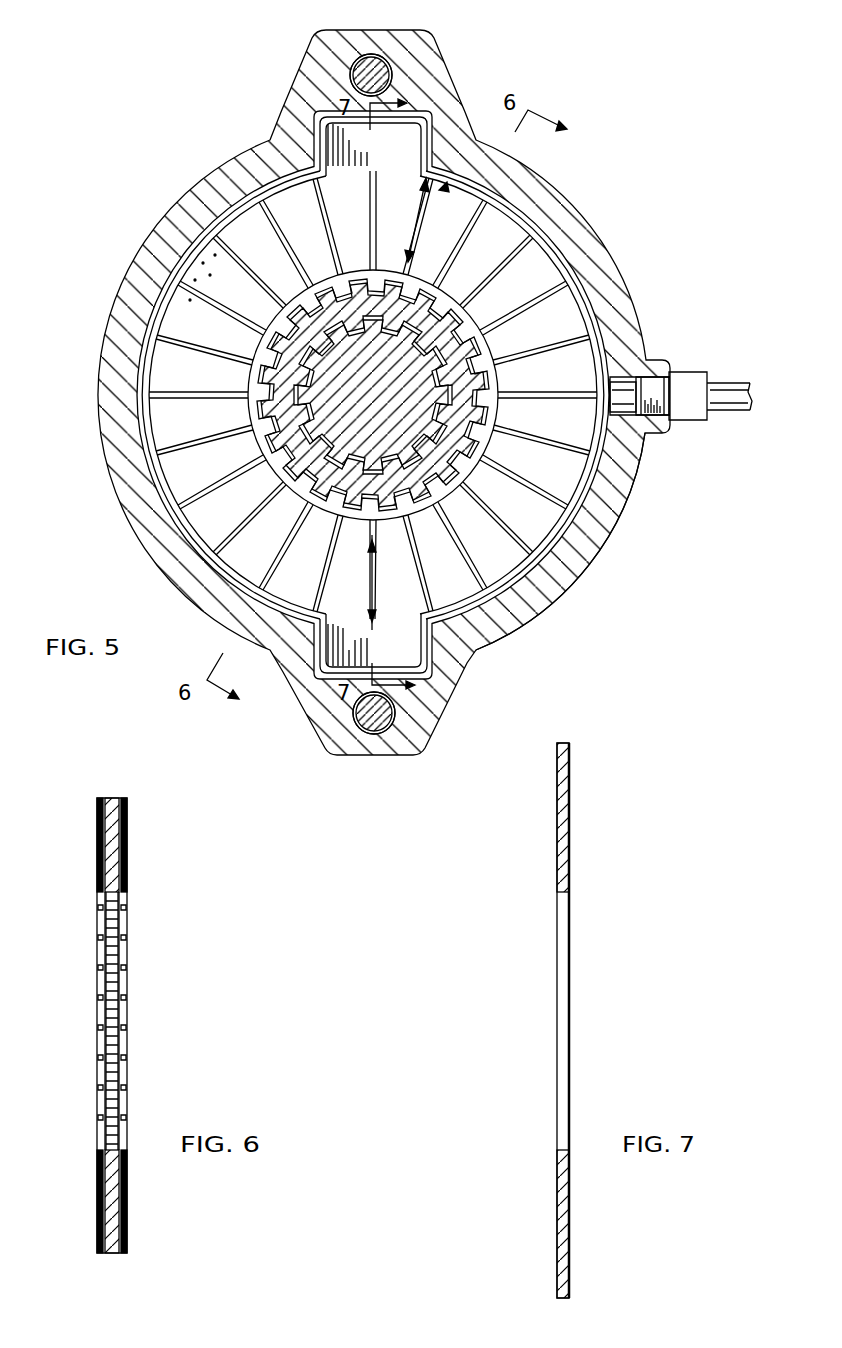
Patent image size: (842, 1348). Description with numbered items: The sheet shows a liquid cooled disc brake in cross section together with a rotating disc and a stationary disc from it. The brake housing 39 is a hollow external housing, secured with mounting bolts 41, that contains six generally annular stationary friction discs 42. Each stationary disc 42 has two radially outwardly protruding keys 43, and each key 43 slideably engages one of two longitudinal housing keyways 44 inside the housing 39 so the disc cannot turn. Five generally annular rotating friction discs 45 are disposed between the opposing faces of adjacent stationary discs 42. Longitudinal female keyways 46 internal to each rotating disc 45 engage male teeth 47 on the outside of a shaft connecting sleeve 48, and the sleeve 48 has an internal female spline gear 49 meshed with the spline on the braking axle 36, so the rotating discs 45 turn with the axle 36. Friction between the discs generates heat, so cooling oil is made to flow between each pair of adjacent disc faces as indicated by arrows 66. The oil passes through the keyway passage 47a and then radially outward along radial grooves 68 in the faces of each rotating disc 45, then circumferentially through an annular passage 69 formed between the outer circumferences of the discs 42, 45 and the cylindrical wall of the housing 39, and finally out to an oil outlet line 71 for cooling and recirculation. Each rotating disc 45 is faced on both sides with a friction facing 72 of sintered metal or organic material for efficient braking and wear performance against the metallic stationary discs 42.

In FIG. 5, the braking axle 36 is at (376, 395).
In FIG. 5, the brake housing 39 is at (590, 243).
In FIG. 5, the mounting bolt 41 is at (373, 63).
In FIG. 5, the stationary friction disc 42 is at (228, 217).
In FIG. 7, the stationary friction disc 42 is at (563, 947).
In FIG. 5, the key 43 is at (335, 133).
In FIG. 7, the key 43 is at (562, 763).
In FIG. 5, the housing keyway 44 is at (415, 118).
In FIG. 5, the rotating friction disc 45 is at (327, 505).
In FIG. 6, the rotating friction disc 45 is at (110, 955).
In FIG. 5, the female keyway 46 is at (420, 312).
In FIG. 5, the male tooth 47 is at (469, 313).
In FIG. 5, the keyway passage 47a is at (492, 357).
In FIG. 5, the shaft connecting sleeve 48 is at (357, 300).
In FIG. 5, the female spline gear 49 is at (439, 380).
In FIG. 5, the arrows 66 is at (398, 630).
In FIG. 5, the radial groove 68 is at (193, 500).
In FIG. 6, the radial groove 68 is at (123, 908).
In FIG. 5, the annular passage 69 is at (577, 510).
In FIG. 5, the oil outlet line 71 is at (713, 430).
In FIG. 5, the friction facing 72 is at (203, 265).
In FIG. 6, the friction facing 72 is at (102, 835).